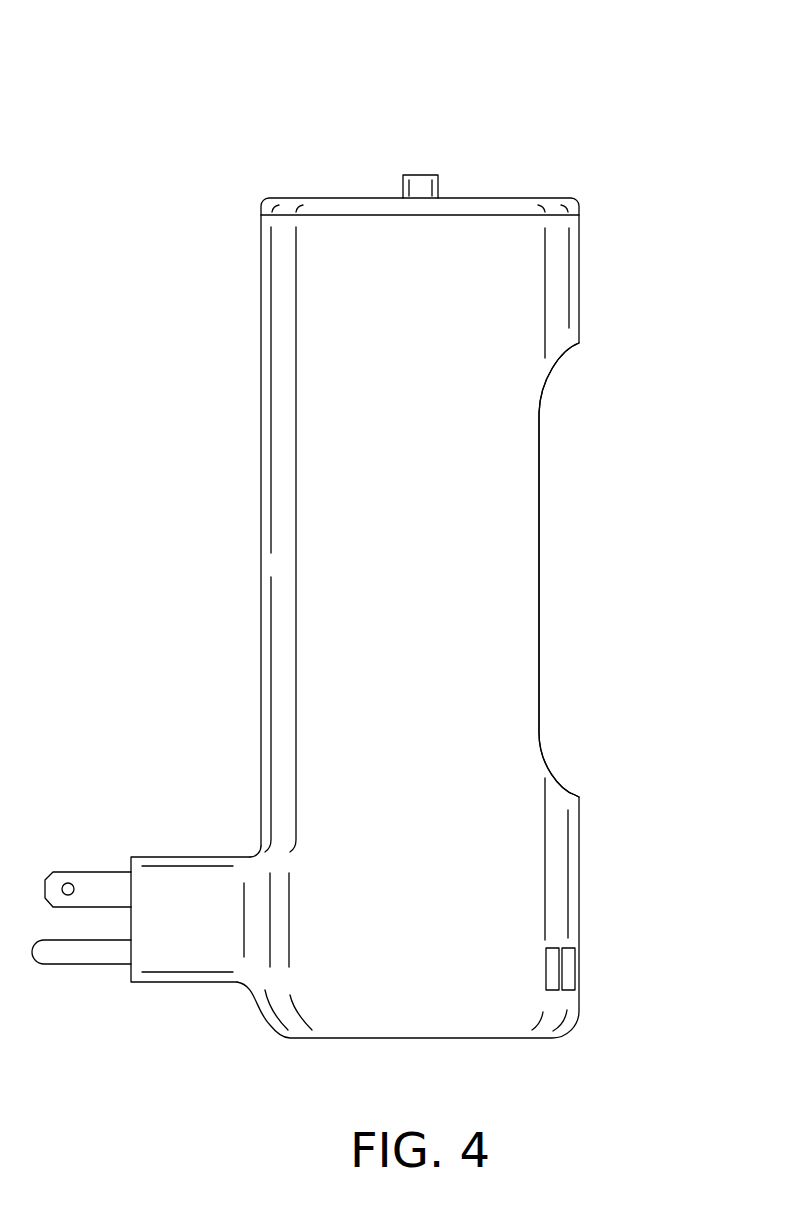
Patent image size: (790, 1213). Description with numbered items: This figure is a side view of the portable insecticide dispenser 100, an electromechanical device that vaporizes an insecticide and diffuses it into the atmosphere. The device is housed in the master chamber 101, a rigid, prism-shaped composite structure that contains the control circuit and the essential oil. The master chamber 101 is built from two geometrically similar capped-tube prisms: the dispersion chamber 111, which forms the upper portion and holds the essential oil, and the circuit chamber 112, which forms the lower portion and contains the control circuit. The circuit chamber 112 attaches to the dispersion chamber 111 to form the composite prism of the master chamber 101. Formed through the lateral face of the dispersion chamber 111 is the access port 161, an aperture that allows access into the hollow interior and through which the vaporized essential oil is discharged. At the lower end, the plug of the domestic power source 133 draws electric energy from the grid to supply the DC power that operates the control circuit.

The portable insecticide dispenser 100 is at (165, 116).
The master chamber 101 is at (253, 268).
The dispersion chamber 111 is at (550, 292).
The circuit chamber 112 is at (530, 902).
The access port 161 is at (558, 738).
The domestic power source 133 is at (131, 857).